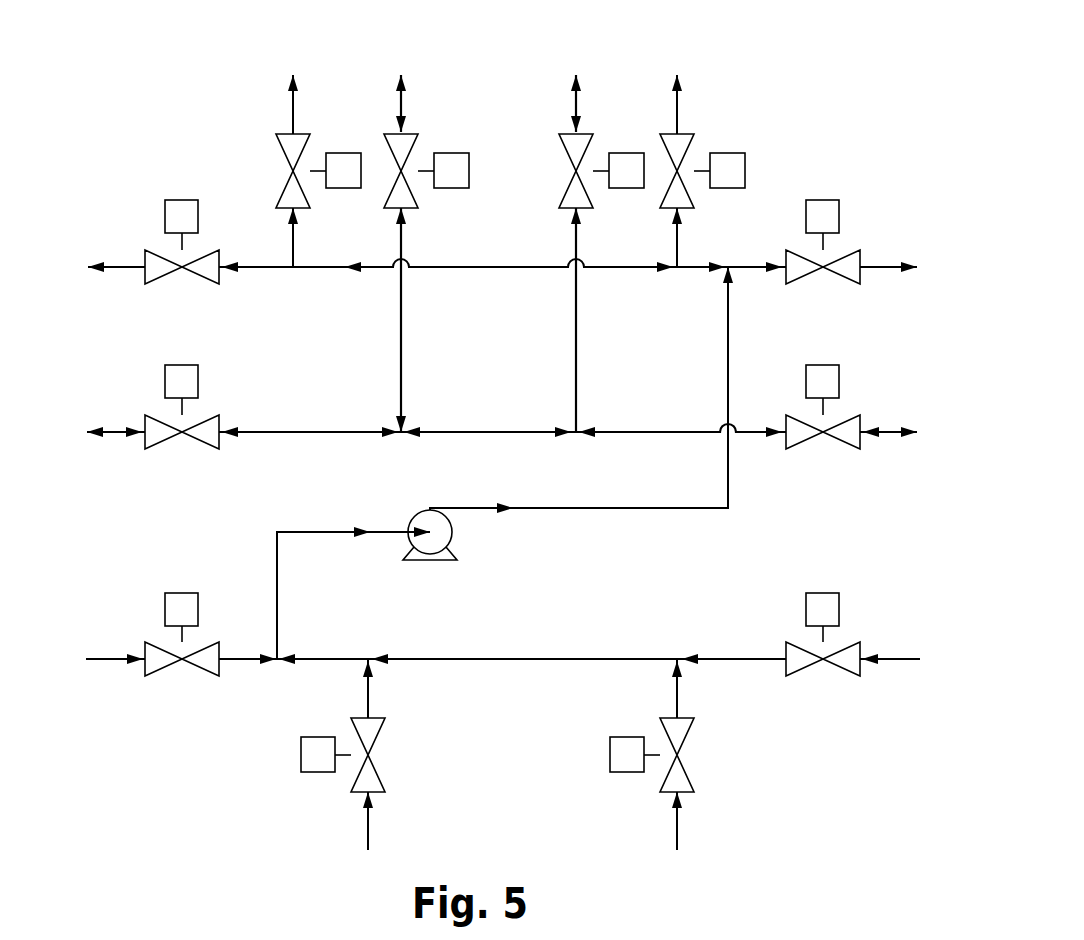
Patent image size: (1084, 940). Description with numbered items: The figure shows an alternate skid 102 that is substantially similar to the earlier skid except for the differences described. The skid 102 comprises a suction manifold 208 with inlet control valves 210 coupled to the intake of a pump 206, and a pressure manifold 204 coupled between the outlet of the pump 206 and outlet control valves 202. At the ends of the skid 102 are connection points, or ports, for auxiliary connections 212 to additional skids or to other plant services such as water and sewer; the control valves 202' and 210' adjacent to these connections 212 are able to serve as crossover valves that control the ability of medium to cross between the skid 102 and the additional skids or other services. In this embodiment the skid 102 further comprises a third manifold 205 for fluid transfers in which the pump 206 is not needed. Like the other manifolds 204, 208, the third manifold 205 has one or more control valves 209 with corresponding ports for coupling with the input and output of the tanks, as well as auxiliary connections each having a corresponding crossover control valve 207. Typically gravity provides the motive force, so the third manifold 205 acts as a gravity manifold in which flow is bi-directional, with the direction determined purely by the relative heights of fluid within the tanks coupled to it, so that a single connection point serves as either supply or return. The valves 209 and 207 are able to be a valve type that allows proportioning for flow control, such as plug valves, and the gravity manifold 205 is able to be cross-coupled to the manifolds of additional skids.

The skid 102 is at (856, 31).
The outlet control valve 202 is at (513, 171).
The crossover control valve 202' is at (502, 228).
The pressure manifold 204 is at (502, 255).
The third manifold 205 is at (502, 421).
The pump 206 is at (505, 463).
The crossover control valve 207 is at (502, 394).
The suction manifold 208 is at (502, 671).
The control valve 209 is at (516, 253).
The inlet control valve 210 is at (475, 754).
The crossover control valve 210' is at (502, 621).
The auxiliary connection 212 is at (503, 464).